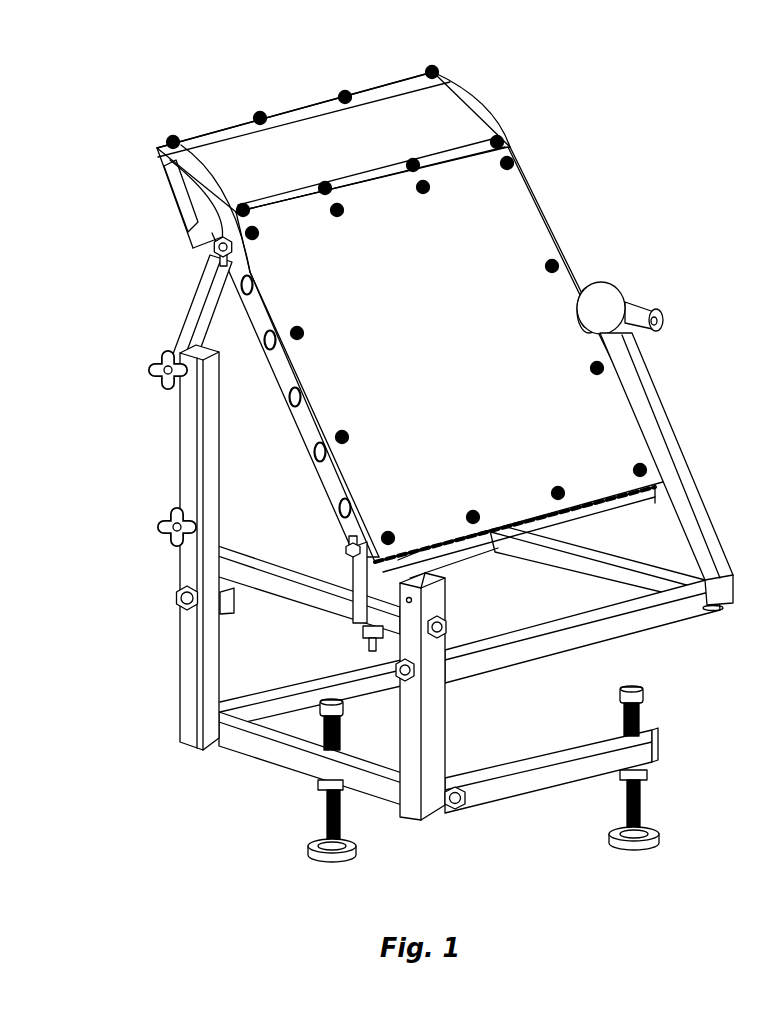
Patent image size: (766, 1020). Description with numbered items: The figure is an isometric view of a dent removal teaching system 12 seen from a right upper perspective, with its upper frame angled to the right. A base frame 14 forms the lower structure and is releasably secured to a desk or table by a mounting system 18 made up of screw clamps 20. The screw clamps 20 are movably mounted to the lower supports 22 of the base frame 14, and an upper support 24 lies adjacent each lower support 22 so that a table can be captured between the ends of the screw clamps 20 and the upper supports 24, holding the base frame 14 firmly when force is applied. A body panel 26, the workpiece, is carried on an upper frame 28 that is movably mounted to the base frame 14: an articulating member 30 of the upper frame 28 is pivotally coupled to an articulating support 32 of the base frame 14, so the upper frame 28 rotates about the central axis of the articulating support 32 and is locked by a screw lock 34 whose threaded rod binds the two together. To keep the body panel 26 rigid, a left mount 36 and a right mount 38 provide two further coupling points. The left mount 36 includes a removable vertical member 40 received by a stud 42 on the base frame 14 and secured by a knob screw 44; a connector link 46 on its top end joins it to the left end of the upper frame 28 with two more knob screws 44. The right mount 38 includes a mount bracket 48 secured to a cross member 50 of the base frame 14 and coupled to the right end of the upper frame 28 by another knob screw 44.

The dent removal teaching system 12 is at (630, 90).
The base frame 14 is at (673, 672).
The mounting system 18 is at (490, 855).
The screw clamps 20 is at (312, 853).
The lower support 22 is at (490, 770).
The upper support 24 is at (222, 593).
The body panel 26 is at (490, 223).
The upper frame 28 is at (562, 207).
The articulating member 30 is at (585, 287).
The articulating support 32 is at (607, 290).
The screw lock 34 is at (645, 313).
The left mount 36 is at (160, 443).
The right mount 38 is at (340, 543).
The removable vertical member 40 is at (207, 452).
The stud 42 is at (433, 593).
The knob screw 44 is at (205, 250).
The connector link 46 is at (205, 313).
The mount bracket 48 is at (357, 603).
The cross member 50 is at (288, 585).